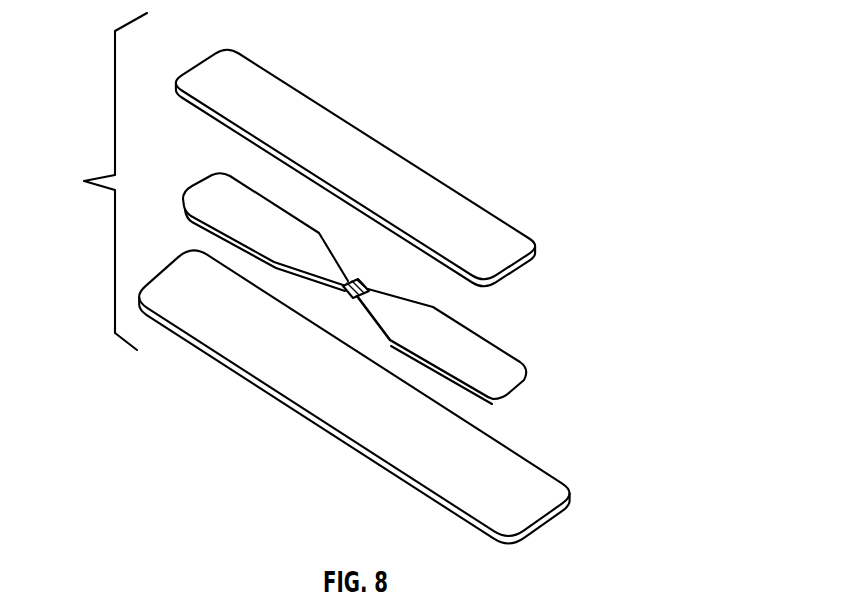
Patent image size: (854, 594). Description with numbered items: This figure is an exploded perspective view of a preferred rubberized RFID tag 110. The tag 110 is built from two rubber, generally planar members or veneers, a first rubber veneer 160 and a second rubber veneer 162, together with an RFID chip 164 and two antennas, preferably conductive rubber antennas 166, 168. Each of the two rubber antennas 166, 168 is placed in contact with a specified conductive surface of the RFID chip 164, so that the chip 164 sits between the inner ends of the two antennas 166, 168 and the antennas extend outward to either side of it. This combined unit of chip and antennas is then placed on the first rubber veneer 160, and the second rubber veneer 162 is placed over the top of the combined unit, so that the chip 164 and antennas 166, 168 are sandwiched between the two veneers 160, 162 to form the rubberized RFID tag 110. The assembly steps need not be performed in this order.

The rubberized RFID tag 110 is at (94, 181).
The first rubber veneer 160 is at (512, 478).
The second rubber veneer 162 is at (473, 218).
The RFID chip 164 is at (353, 280).
The conductive rubber antenna 166 is at (235, 205).
The conductive rubber antenna 168 is at (483, 367).